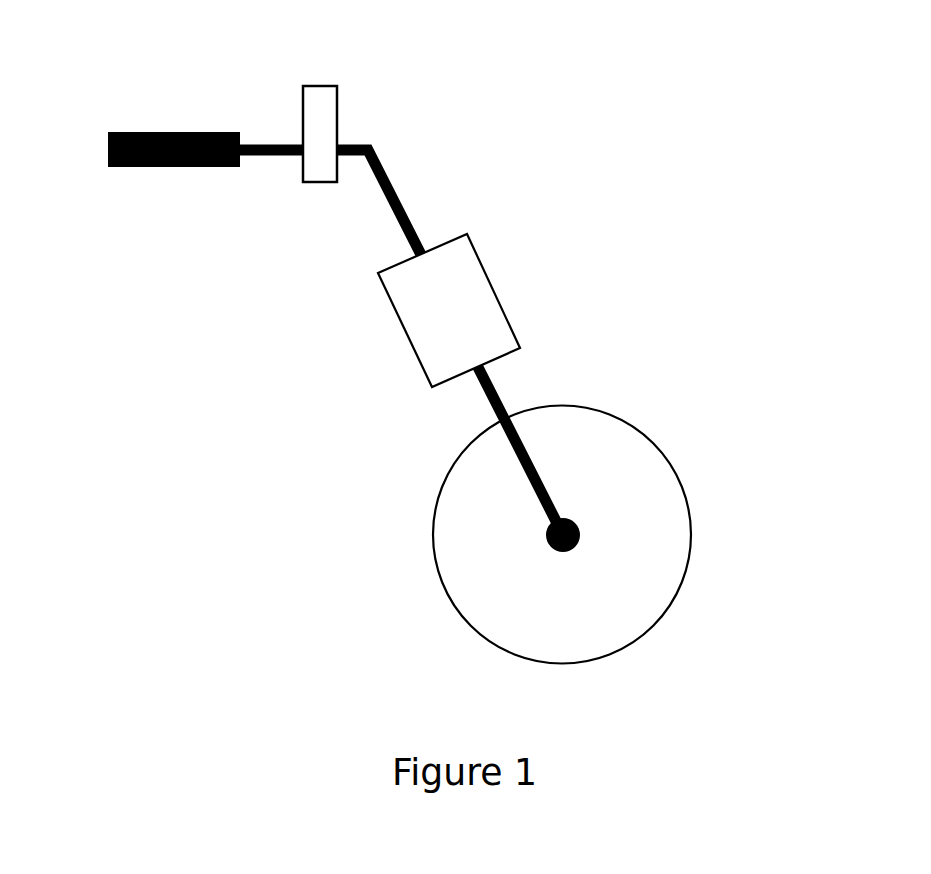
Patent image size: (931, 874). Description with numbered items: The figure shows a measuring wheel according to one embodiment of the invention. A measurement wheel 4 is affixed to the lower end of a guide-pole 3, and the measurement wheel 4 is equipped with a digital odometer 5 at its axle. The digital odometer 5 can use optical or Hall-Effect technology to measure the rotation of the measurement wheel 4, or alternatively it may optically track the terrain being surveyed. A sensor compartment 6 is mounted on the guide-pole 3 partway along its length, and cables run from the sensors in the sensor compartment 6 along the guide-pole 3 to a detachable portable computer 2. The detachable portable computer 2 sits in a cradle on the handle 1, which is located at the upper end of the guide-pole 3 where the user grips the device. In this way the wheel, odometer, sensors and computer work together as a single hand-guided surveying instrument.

The handle 1 is at (173, 183).
The detachable portable computer 2 is at (340, 120).
The guide-pole 3 is at (402, 202).
The measurement wheel 4 is at (690, 525).
The digital odometer 5 is at (573, 549).
The sensor compartment 6 is at (395, 334).